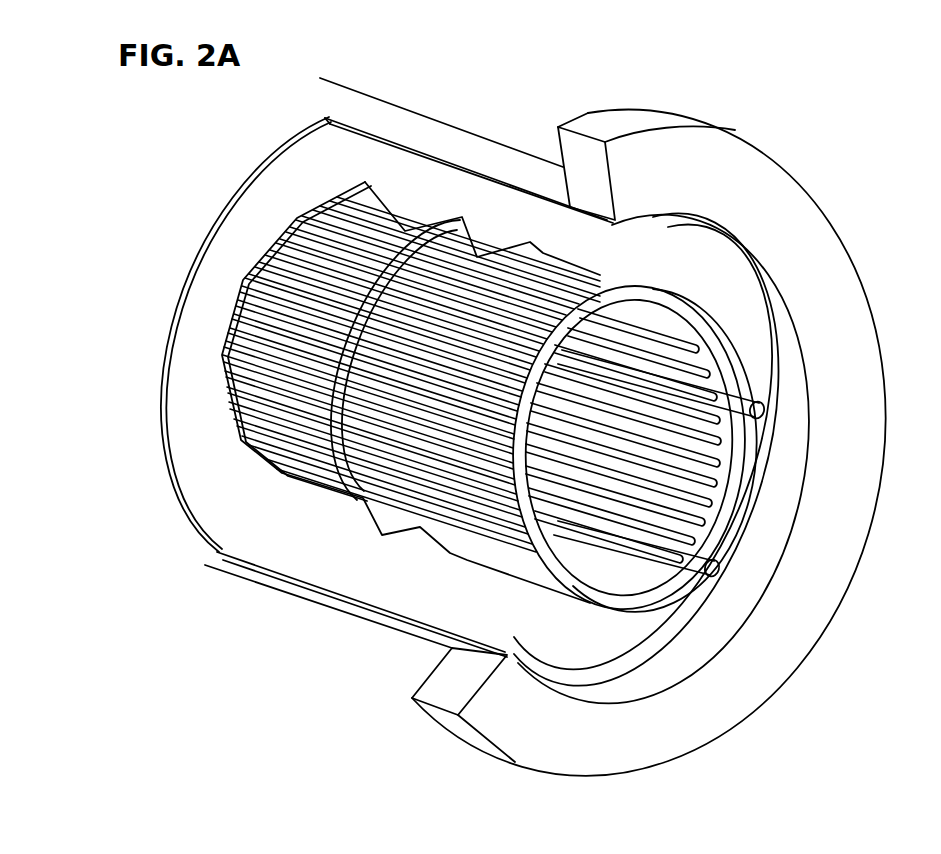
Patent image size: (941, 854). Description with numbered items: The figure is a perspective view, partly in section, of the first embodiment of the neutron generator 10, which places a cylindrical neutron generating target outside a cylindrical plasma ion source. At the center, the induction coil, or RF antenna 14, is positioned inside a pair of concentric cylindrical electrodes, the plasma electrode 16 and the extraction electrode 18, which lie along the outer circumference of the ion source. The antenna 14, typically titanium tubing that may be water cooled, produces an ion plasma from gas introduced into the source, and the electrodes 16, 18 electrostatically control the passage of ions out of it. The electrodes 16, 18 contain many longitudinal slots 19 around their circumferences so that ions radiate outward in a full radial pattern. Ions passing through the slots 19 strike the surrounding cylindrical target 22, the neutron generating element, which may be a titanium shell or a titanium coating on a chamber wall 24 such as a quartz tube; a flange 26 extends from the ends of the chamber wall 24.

The neutron generator 10 is at (222, 608).
The RF antenna (induction coil) 14 is at (757, 410).
The plasma electrode 16 is at (703, 540).
The extraction electrode 18 is at (743, 487).
The longitudinal slots 19 is at (707, 458).
The target 22 is at (768, 352).
The chamber wall 24 is at (377, 588).
The flange 26 is at (558, 124).